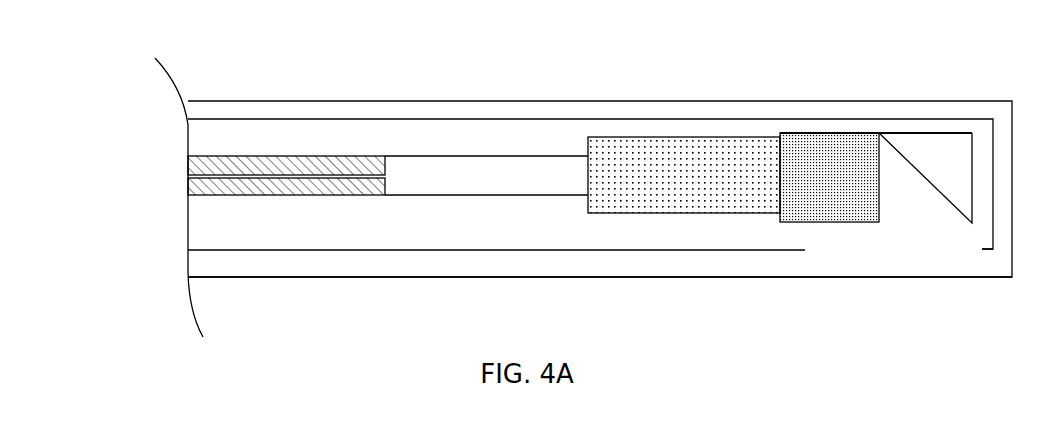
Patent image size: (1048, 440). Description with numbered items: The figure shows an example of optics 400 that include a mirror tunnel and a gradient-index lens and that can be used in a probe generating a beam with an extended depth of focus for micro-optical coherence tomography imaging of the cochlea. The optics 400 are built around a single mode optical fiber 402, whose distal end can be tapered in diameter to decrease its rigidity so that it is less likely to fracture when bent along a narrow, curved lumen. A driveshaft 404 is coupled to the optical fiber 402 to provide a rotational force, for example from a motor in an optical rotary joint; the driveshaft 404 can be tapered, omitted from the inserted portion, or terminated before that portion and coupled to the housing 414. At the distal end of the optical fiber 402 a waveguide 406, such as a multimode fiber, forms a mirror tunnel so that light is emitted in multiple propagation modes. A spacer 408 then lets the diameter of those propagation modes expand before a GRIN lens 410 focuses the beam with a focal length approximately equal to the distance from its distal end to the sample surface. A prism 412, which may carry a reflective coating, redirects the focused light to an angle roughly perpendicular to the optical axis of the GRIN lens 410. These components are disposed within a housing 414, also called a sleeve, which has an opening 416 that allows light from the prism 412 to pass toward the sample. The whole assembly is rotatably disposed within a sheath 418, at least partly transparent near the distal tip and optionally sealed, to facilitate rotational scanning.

The optics 400 is at (552, 50).
The single mode optical fiber 402 is at (161, 170).
The driveshaft 404 is at (291, 148).
The waveguide 406 is at (394, 148).
The spacer 408 is at (648, 126).
The GRIN lens 410 is at (825, 123).
The prism 412 is at (909, 123).
The housing 414 is at (503, 264).
The opening 416 is at (902, 262).
The sheath 418 is at (333, 291).